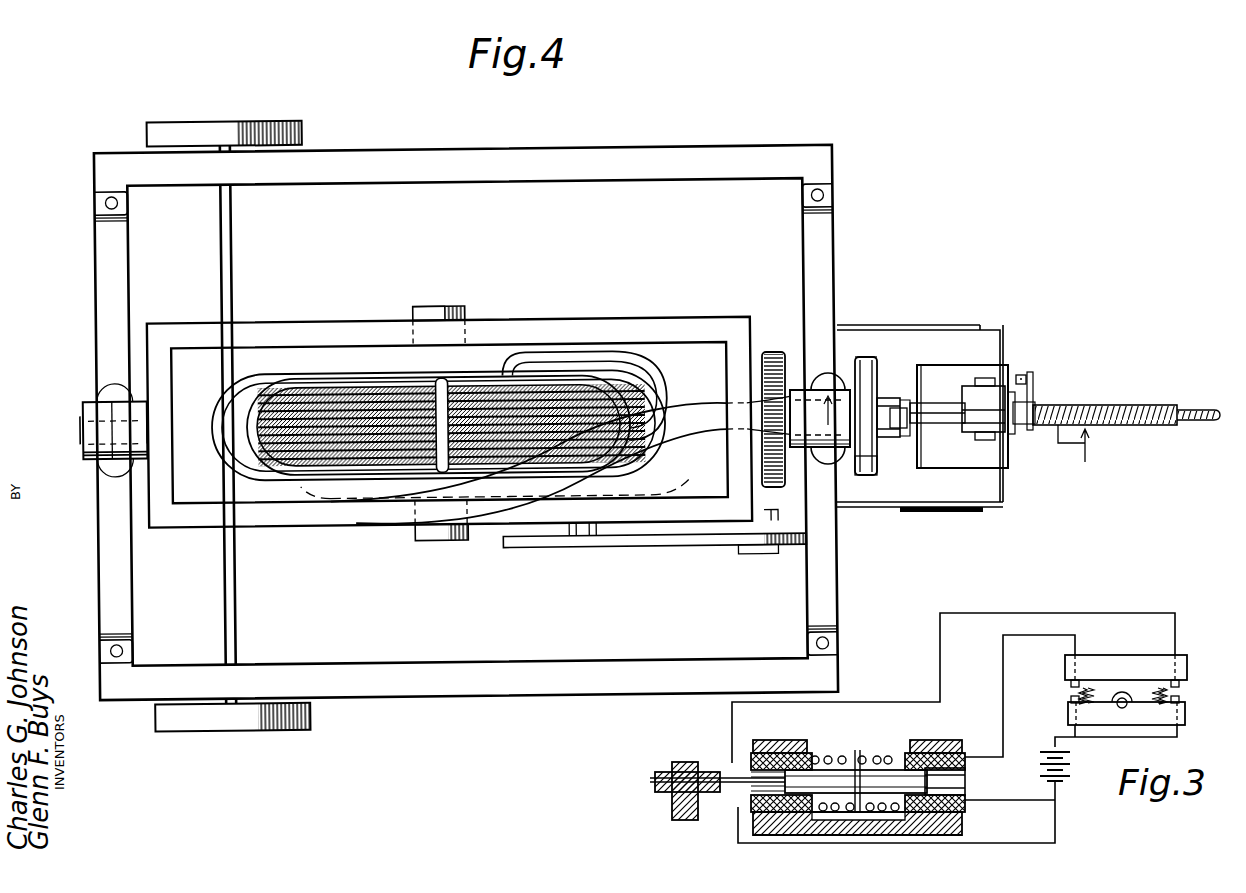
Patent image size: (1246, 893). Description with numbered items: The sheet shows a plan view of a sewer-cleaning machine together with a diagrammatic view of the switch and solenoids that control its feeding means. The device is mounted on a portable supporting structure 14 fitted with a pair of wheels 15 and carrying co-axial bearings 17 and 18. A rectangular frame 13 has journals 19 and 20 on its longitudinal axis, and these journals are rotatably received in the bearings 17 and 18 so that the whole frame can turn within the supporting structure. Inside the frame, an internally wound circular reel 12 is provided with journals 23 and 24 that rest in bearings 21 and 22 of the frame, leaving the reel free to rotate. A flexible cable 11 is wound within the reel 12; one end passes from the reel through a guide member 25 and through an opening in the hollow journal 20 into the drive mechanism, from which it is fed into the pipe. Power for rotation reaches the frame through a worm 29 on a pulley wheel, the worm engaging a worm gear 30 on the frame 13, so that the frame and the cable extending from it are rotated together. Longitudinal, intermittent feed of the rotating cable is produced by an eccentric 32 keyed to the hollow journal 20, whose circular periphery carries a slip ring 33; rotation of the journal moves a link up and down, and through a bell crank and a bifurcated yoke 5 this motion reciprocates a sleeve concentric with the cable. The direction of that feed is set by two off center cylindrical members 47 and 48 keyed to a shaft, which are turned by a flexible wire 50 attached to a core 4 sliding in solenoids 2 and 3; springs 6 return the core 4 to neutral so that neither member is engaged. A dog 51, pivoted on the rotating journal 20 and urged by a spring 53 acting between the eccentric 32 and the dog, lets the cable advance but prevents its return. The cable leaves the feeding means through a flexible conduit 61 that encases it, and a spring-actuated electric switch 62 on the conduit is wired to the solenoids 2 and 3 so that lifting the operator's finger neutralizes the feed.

In FIG. 3, the solenoid 2 is at (806, 740).
In FIG. 3, the solenoid 3 is at (965, 756).
In FIG. 3, the core 4 is at (871, 770).
In FIG. 4, the bifurcated yoke 5 is at (946, 418).
In FIG. 3, the springs 6 is at (838, 755).
In FIG. 4, the flexible cable 11 is at (310, 378).
In FIG. 4, the internally wound circular reel 12 is at (333, 378).
In FIG. 4, the rectangular frame 13 is at (297, 525).
In FIG. 4, the portable supporting structure 14 is at (598, 162).
In FIG. 4, the wheels 15 is at (300, 122).
In FIG. 4, the bearing 17 is at (92, 408).
In FIG. 4, the bearing 18 is at (856, 466).
In FIG. 4, the journal 19 is at (112, 418).
In FIG. 4, the journal 20 is at (845, 530).
In FIG. 4, the bearing 21 is at (410, 510).
In FIG. 4, the bearing 22 is at (485, 322).
In FIG. 4, the journal 23 is at (413, 312).
In FIG. 4, the journal 24 is at (434, 541).
In FIG. 4, the guide member 25 is at (683, 450).
In FIG. 4, the worm 29 is at (778, 521).
In FIG. 4, the worm gear 30 is at (772, 352).
In FIG. 4, the eccentric 32 is at (880, 466).
In FIG. 4, the slip ring 33 is at (878, 485).
In FIG. 4, the off center cylindrical member 47 is at (933, 410).
In FIG. 4, the off center cylindrical member 48 is at (980, 415).
In FIG. 3, the flexible wire 50 is at (748, 786).
In FIG. 4, the dog 51 is at (898, 405).
In FIG. 4, the spring 53 is at (879, 357).
In FIG. 4, the flexible conduit 61 is at (1098, 405).
In FIG. 3, the electric switch 62 is at (1187, 668).